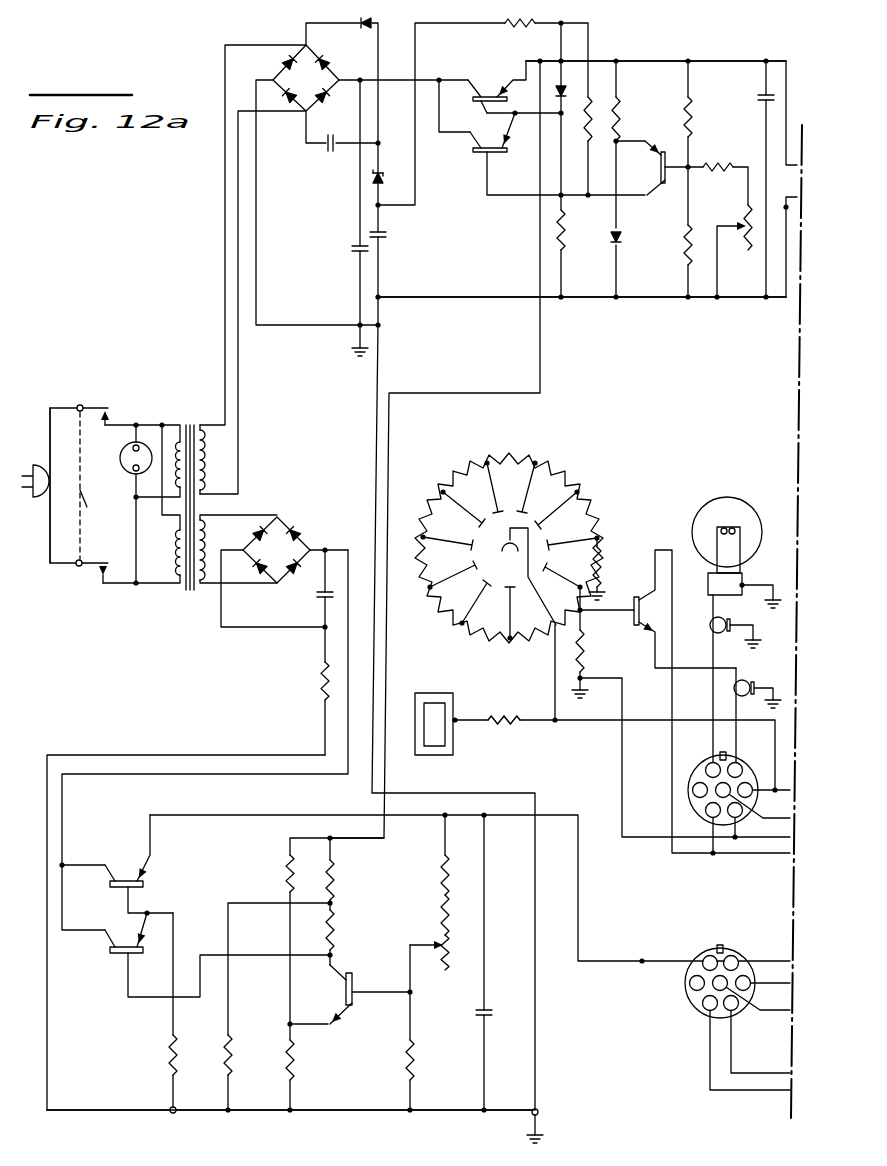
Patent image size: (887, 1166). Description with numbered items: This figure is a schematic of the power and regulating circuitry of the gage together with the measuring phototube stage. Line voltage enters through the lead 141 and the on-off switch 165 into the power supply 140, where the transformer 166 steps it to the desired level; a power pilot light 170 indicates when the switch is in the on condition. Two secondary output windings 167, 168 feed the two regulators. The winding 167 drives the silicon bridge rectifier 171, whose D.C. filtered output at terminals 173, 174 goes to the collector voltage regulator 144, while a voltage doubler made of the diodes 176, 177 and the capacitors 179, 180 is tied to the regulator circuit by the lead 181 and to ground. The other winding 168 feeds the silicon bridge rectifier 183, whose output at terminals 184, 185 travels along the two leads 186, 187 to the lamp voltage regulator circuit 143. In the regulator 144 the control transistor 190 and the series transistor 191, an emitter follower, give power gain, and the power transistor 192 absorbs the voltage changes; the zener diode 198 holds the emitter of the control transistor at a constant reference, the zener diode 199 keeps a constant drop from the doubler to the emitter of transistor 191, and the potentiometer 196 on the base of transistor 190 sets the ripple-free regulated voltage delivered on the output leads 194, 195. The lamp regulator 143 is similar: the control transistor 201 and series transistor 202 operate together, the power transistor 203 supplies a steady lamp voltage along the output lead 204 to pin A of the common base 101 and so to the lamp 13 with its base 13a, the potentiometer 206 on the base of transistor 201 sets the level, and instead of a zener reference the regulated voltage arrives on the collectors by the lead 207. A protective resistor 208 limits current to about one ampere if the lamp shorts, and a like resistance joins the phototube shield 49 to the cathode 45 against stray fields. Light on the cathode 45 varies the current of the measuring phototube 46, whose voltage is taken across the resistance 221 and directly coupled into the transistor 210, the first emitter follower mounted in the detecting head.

The light source lamp 13 is at (730, 502).
The lamp base 13a is at (742, 538).
The measuring phototube cathode 45 is at (512, 528).
The measuring phototube 46 is at (464, 603).
The phototube shield 49 is at (435, 750).
The common base 101 is at (692, 790).
The power supply 140 is at (78, 616).
The lead 141 is at (50, 500).
The lamp voltage regulator circuit 143 is at (393, 918).
The collector voltage regulator 144 is at (486, 235).
The on-off switch 165 is at (94, 494).
The transformer 166 is at (200, 420).
The secondary output winding 167 is at (203, 470).
The secondary output winding 168 is at (202, 566).
The power pilot light 170 is at (121, 453).
The silicon bridge rectifier 171 is at (319, 87).
The D.C. terminal 173 is at (305, 113).
The D.C. terminal 174 is at (304, 43).
The diode 176 is at (364, 18).
The diode 177 is at (372, 179).
The capacitor 179 is at (345, 127).
The capacitor 180 is at (380, 240).
The lead 181 is at (376, 480).
The silicon bridge rectifier 183 is at (289, 563).
The D.C. terminal 184 is at (245, 548).
The D.C. terminal 185 is at (311, 552).
The lead 186 is at (62, 752).
The lead 187 is at (172, 775).
The control transistor 190 is at (666, 178).
The series transistor 191 is at (481, 153).
The power transistor 192 is at (481, 103).
The output lead 194 is at (793, 163).
The output lead 195 is at (786, 207).
The potentiometer 196 is at (750, 245).
The zener diode 198 is at (612, 238).
The zener diode 199 is at (567, 85).
The control transistor 201 is at (342, 1008).
The series transistor 202 is at (117, 953).
The power transistor 203 is at (118, 888).
The output lead 204 is at (262, 815).
The potentiometer 206 is at (447, 950).
The lead 207 is at (405, 393).
The protective resistor 208 is at (320, 690).
The transistor 210 is at (632, 618).
The resistance 221 is at (572, 652).